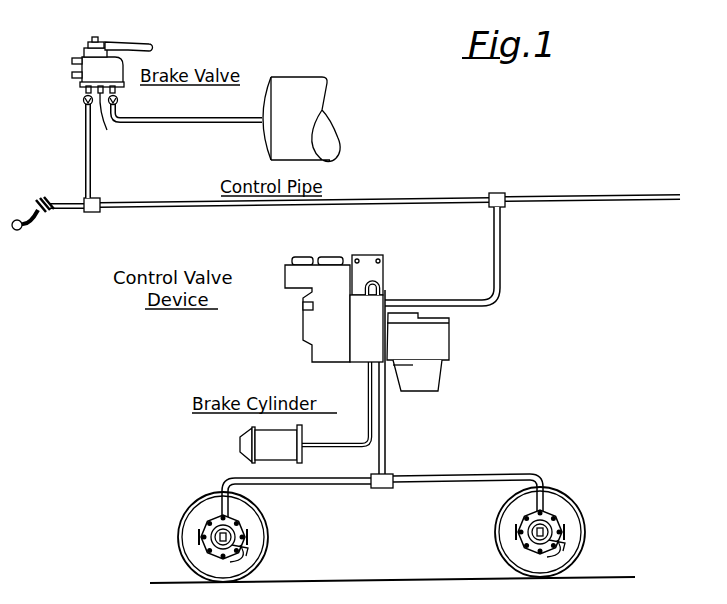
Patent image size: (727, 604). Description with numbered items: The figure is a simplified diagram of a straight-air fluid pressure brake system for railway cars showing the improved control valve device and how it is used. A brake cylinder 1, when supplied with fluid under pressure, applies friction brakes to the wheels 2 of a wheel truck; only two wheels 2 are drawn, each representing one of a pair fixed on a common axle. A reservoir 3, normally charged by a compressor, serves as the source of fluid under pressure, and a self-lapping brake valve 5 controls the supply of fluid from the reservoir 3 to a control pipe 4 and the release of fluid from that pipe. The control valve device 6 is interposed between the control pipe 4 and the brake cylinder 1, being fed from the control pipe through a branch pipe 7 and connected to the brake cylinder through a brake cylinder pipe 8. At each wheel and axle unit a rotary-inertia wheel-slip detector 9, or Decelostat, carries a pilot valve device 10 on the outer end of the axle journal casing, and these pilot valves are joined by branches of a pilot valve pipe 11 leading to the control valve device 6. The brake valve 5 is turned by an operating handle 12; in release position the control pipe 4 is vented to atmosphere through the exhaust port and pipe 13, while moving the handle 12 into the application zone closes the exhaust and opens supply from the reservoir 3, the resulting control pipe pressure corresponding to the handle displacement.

The brake cylinder 1 is at (240, 441).
The wheels 2 is at (193, 561).
The reservoir 3 is at (318, 90).
The control pipe 4 is at (449, 200).
The brake valve 5 is at (74, 71).
The control valve device 6 is at (303, 325).
The branch pipe 7 is at (494, 236).
The brake cylinder pipe 8 is at (368, 378).
The wheel-slip detector 9 is at (213, 537).
The pilot valve device 10 is at (232, 540).
The pilot valve pipe 11 is at (386, 449).
The operating handle 12 is at (150, 44).
The exhaust pipe 13 is at (114, 124).